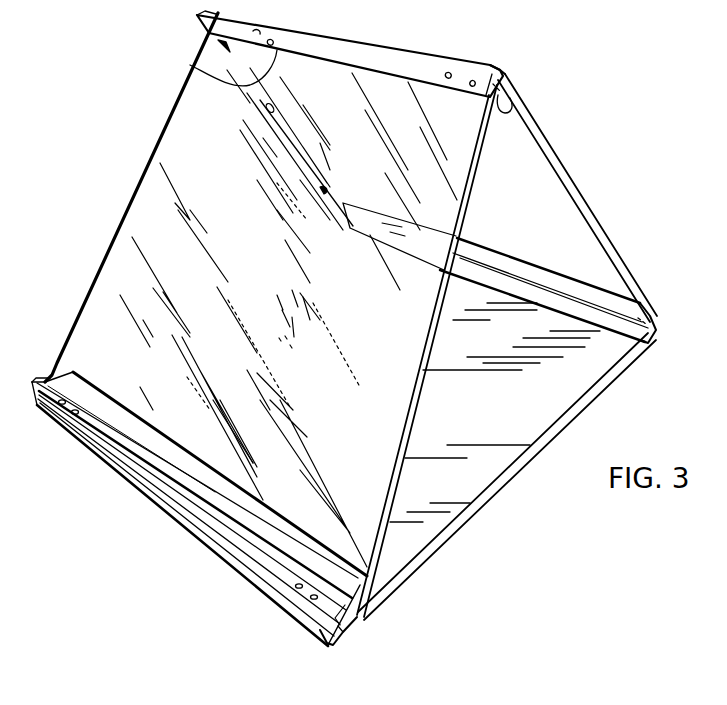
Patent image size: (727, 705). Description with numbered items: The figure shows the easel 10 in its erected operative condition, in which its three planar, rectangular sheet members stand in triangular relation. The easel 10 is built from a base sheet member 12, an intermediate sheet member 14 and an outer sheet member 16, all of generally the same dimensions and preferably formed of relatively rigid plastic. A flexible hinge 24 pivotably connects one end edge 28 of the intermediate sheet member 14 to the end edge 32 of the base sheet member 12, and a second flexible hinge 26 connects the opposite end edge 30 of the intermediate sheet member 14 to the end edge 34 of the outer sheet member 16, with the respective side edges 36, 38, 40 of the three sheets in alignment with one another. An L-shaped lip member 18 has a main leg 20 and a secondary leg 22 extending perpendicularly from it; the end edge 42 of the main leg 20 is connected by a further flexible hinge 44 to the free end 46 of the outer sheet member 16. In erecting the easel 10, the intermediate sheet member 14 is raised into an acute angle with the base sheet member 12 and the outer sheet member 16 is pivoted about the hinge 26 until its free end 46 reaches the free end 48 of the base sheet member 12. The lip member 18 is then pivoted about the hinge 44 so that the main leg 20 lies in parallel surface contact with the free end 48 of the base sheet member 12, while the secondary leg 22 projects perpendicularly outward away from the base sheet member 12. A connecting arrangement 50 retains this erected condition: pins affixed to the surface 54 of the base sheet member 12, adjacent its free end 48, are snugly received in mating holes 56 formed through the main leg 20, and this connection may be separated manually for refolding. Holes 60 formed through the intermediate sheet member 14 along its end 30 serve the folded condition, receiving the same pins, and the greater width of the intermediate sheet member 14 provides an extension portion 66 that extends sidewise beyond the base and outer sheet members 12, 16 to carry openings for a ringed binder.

The easel 10 is at (512, 529).
The base sheet member 12 is at (449, 536).
The intermediate sheet member 14 is at (597, 233).
The outer sheet member 16 is at (128, 220).
The L-shaped lip member 18 is at (338, 642).
The main leg 20 is at (343, 633).
The secondary leg 22 is at (210, 525).
The flexible hinge 24 is at (655, 325).
The flexible hinge 26 is at (503, 62).
The end edge of intermediate sheet member 28 is at (600, 290).
The end edge of intermediate sheet member 30 is at (512, 106).
The end edge of base sheet member 32 is at (603, 340).
The end edge of outer sheet member 34 is at (190, 65).
The side edge of base sheet member 36 is at (500, 485).
The side edge of intermediate sheet member 38 is at (563, 173).
The side edge of outer sheet member 40 is at (440, 317).
The end edge of main leg 42 is at (175, 487).
The flexible hinge 44 is at (127, 450).
The free end of outer sheet member 46 is at (80, 376).
The free end of base sheet member 48 is at (243, 569).
The connecting arrangement 50 is at (377, 620).
The surface of base sheet member 54 is at (486, 418).
The mating holes 56 is at (66, 398).
The holes 60 is at (273, 53).
The extension portion 66 is at (205, 30).